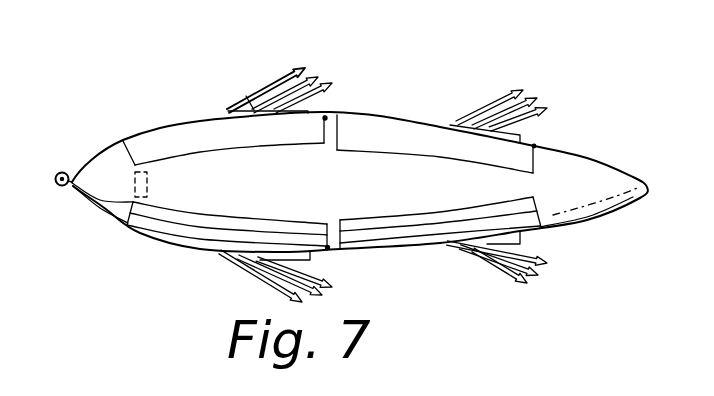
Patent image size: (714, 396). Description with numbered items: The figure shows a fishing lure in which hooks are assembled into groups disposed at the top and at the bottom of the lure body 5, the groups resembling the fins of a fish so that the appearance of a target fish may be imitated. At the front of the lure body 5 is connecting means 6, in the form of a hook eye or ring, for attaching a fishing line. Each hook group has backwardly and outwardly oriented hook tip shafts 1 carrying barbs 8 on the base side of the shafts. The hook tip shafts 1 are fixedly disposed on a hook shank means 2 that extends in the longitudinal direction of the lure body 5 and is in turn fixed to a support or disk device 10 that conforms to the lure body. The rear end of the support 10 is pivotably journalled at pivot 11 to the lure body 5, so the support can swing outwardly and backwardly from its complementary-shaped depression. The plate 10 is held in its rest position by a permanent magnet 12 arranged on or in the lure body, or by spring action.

The hook tip shaft 1 is at (278, 77).
The hook shank means 2 is at (245, 107).
The lure body 5 is at (580, 163).
The connecting means 6 is at (66, 185).
The barb 8 is at (307, 70).
The support or disk device 10 is at (183, 133).
The pivot 11 is at (326, 118).
The permanent magnet 12 is at (135, 180).